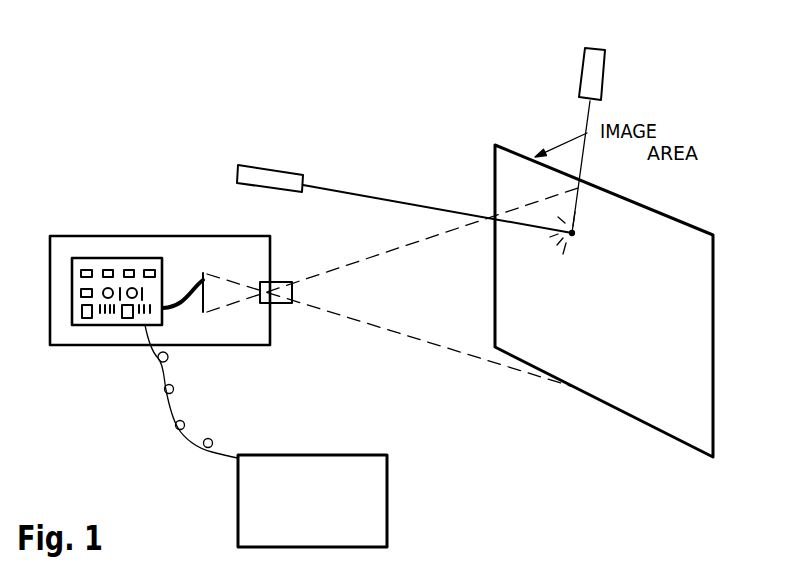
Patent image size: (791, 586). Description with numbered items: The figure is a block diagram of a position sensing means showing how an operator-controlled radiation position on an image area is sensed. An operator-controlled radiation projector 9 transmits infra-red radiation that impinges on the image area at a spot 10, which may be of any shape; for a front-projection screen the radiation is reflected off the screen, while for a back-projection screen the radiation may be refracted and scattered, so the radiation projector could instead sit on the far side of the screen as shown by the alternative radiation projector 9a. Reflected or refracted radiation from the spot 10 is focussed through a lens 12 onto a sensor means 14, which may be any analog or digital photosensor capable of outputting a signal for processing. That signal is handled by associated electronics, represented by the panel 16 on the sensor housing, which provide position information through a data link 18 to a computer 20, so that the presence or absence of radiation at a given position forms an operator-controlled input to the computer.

The operator-controlled radiation projector 9 is at (272, 188).
The alternative radiation projector 9a is at (605, 72).
The spot 10 is at (572, 233).
The lens 12 is at (293, 270).
The sensor means 14 is at (214, 321).
The control panel 16 is at (89, 333).
The data link 18 is at (157, 437).
The computer 20 is at (401, 497).